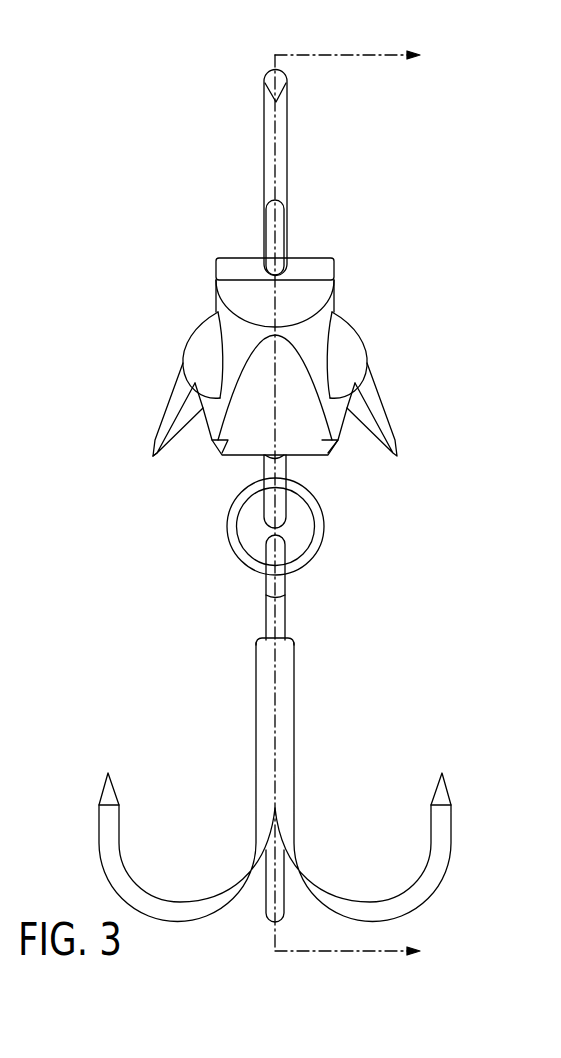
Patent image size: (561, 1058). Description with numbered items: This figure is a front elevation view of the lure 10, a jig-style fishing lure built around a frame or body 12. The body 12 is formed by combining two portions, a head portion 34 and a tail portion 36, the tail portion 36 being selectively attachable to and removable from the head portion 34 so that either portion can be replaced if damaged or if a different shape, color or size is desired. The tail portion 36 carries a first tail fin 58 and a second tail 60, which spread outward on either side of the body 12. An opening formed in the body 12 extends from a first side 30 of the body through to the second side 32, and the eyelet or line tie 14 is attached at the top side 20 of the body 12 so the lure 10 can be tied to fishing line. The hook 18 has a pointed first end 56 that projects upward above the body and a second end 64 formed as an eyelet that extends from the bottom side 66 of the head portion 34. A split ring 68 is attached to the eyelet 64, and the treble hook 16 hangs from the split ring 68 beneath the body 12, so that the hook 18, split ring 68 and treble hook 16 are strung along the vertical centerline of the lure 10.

The lure 10 is at (432, 227).
The body 12 is at (300, 418).
The eyelet 14 is at (264, 240).
The treble hook 16 is at (288, 685).
The rear hook 18 is at (288, 157).
The top side 20 is at (277, 173).
The first side 30 is at (153, 322).
The second side 32 is at (387, 330).
The head portion 34 is at (354, 287).
The tail portion 36 is at (155, 408).
The pointed first end 56 is at (287, 87).
The first tail fin 58 is at (153, 457).
The second tail 60 is at (398, 456).
The second end 64 is at (288, 462).
The bottom side 66 is at (207, 480).
The split ring 68 is at (325, 525).